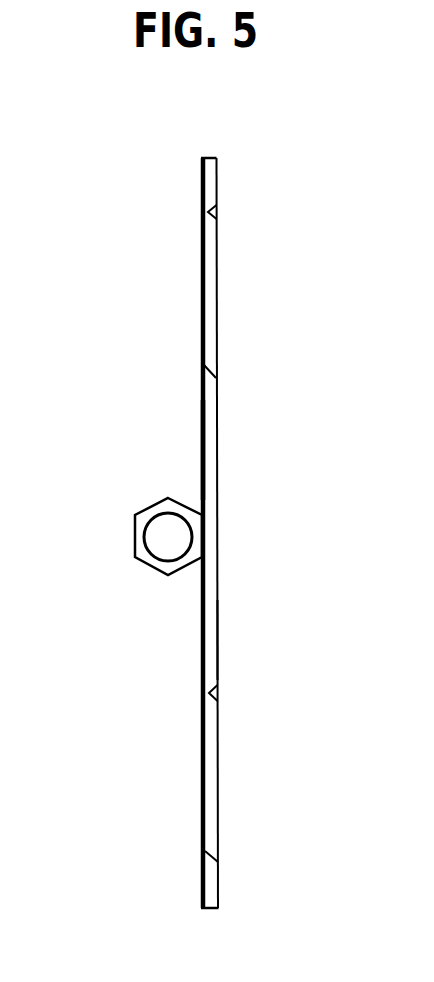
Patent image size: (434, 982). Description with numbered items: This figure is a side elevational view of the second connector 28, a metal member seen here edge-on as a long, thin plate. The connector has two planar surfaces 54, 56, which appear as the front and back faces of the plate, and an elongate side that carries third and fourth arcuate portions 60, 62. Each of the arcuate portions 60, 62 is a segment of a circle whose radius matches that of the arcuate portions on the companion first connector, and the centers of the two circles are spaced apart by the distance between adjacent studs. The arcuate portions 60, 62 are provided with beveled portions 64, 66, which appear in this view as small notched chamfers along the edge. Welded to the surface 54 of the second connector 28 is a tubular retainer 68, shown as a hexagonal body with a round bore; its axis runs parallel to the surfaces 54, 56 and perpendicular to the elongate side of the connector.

The second connector 28 is at (222, 165).
The planar surface 54 is at (203, 465).
The planar surface 56 is at (219, 637).
The third arcuate portion 60 is at (216, 318).
The fourth arcuate portion 62 is at (218, 808).
The beveled portion 64 is at (216, 219).
The beveled portion 66 is at (218, 701).
The tubular retainer 68 is at (133, 535).